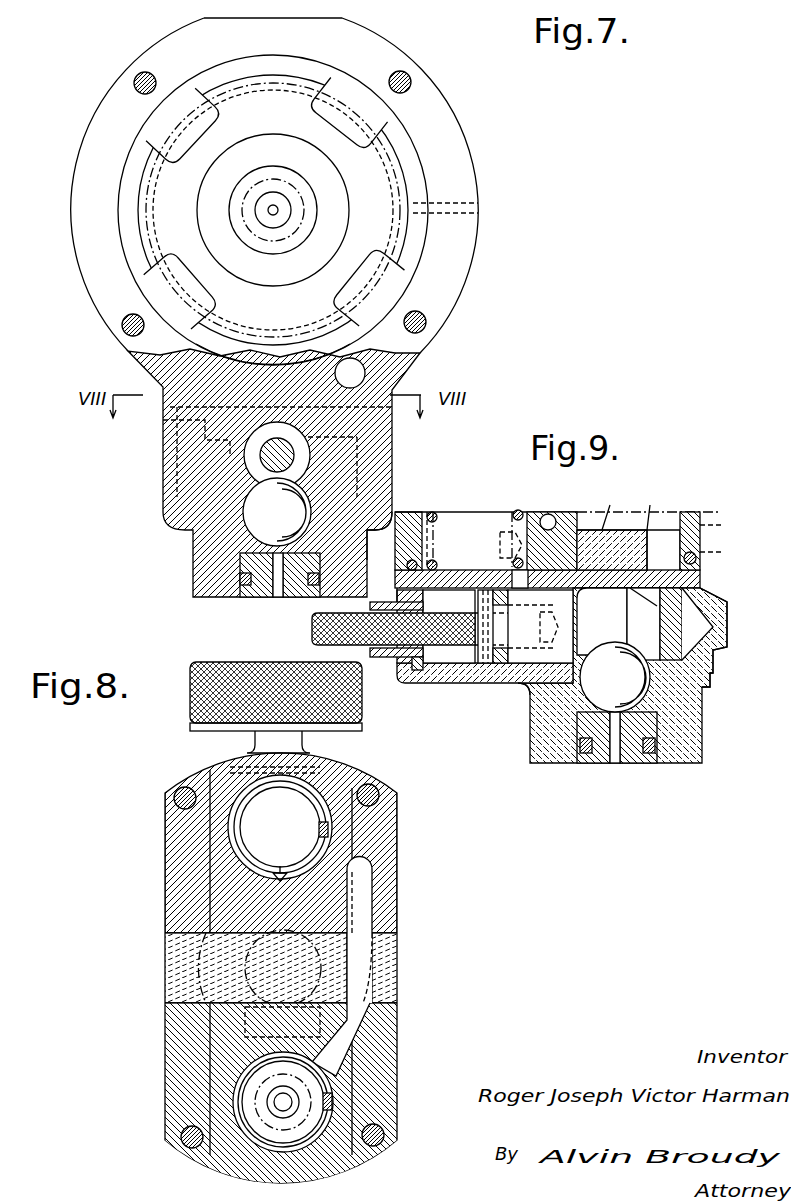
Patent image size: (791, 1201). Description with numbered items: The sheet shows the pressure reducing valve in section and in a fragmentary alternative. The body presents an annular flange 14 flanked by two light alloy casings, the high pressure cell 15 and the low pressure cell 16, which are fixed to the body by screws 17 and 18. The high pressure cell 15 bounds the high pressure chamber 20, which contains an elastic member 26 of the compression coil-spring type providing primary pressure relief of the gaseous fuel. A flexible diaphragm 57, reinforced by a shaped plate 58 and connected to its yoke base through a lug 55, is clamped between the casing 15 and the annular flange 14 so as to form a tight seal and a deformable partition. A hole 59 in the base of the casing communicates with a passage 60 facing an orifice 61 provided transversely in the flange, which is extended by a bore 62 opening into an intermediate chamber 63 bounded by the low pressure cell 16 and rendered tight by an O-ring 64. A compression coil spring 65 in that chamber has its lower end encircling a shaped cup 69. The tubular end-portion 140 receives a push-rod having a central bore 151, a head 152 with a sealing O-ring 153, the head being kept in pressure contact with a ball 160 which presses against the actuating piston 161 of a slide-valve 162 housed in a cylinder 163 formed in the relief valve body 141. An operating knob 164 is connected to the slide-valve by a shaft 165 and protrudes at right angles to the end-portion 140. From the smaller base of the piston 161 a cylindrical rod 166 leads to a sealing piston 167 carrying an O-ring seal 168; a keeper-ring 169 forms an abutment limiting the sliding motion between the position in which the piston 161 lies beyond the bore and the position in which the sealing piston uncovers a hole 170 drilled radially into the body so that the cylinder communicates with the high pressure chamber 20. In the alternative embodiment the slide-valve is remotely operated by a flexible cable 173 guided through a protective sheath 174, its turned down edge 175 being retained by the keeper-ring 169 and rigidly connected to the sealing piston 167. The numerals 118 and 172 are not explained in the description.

In FIG. 7, the annular flange 14 is at (433, 106).
In FIG. 8, the annular flange 14 is at (177, 958).
In FIG. 9, the annular flange 14 is at (599, 530).
In FIG. 8, the casing (high pressure cell) 15 is at (378, 836).
In FIG. 9, the casing (high pressure cell) 15 is at (408, 512).
In FIG. 8, the casing (low pressure cell) 16 is at (385, 1096).
In FIG. 8, the screws 17 is at (176, 799).
In FIG. 8, the screws 18 is at (181, 1137).
In FIG. 8, the high pressure chamber 20 is at (291, 814).
In FIG. 9, the high pressure chamber 20 is at (481, 536).
In FIG. 8, the elastic member 26 is at (318, 830).
In FIG. 9, the elastic member 26 is at (433, 515).
In FIG. 7, the lug 55 is at (270, 223).
In FIG. 7, the flexible diaphragm 57 is at (415, 175).
In FIG. 7, the shaped plate 58 is at (378, 200).
In FIG. 7, the hole 59 is at (350, 326).
In FIG. 8, the passage 60 is at (365, 888).
In FIG. 7, the orifice 61 is at (357, 367).
In FIG. 8, the orifice 61 is at (365, 950).
In FIG. 8, the bore 62 is at (346, 1028).
In FIG. 8, the intermediate chamber 63 is at (233, 1100).
In FIG. 9, the O-ring 64 is at (681, 525).
In FIG. 8, the compression coil spring 65 is at (331, 1093).
In FIG. 8, the shaped cup 69 is at (262, 1088).
In FIG. 7, the duct 118 is at (478, 197).
In FIG. 7, the tubular end-portion 140 is at (347, 530).
In FIG. 9, the tubular end-portion 140 is at (543, 722).
In FIG. 7, the relief valve body 141 is at (173, 450).
In FIG. 7, the central bore 151 is at (275, 578).
In FIG. 7, the head 152 is at (233, 565).
In FIG. 7, the sealing O-ring 153 is at (242, 583).
In FIG. 7, the ball 160 is at (280, 515).
In FIG. 9, the ball 160 is at (620, 680).
In FIG. 9, the actuating piston 161 is at (653, 645).
In FIG. 9, the slide-valve 162 is at (472, 660).
In FIG. 9, the cylinder 163 is at (672, 624).
In FIG. 8, the operating knob 164 is at (200, 697).
In FIG. 8, the shaft 165 is at (303, 746).
In FIG. 7, the cylindrical rod 166 is at (297, 446).
In FIG. 9, the cylindrical rod 166 is at (606, 632).
In FIG. 7, the sealing piston 167 is at (245, 455).
In FIG. 9, the sealing piston 167 is at (545, 626).
In FIG. 9, the O-ring seal 168 is at (524, 685).
In FIG. 9, the keeper-ring 169 is at (425, 603).
In FIG. 8, the hole 170 is at (282, 870).
In FIG. 9, the hole 170 is at (518, 578).
In FIG. 7, the shoulder 172 is at (345, 560).
In FIG. 9, the shoulder 172 is at (683, 714).
In FIG. 9, the flexible cable 173 is at (313, 629).
In FIG. 9, the protective tube or flexible sheath 174 is at (410, 668).
In FIG. 9, the turned down edge 175 is at (436, 684).